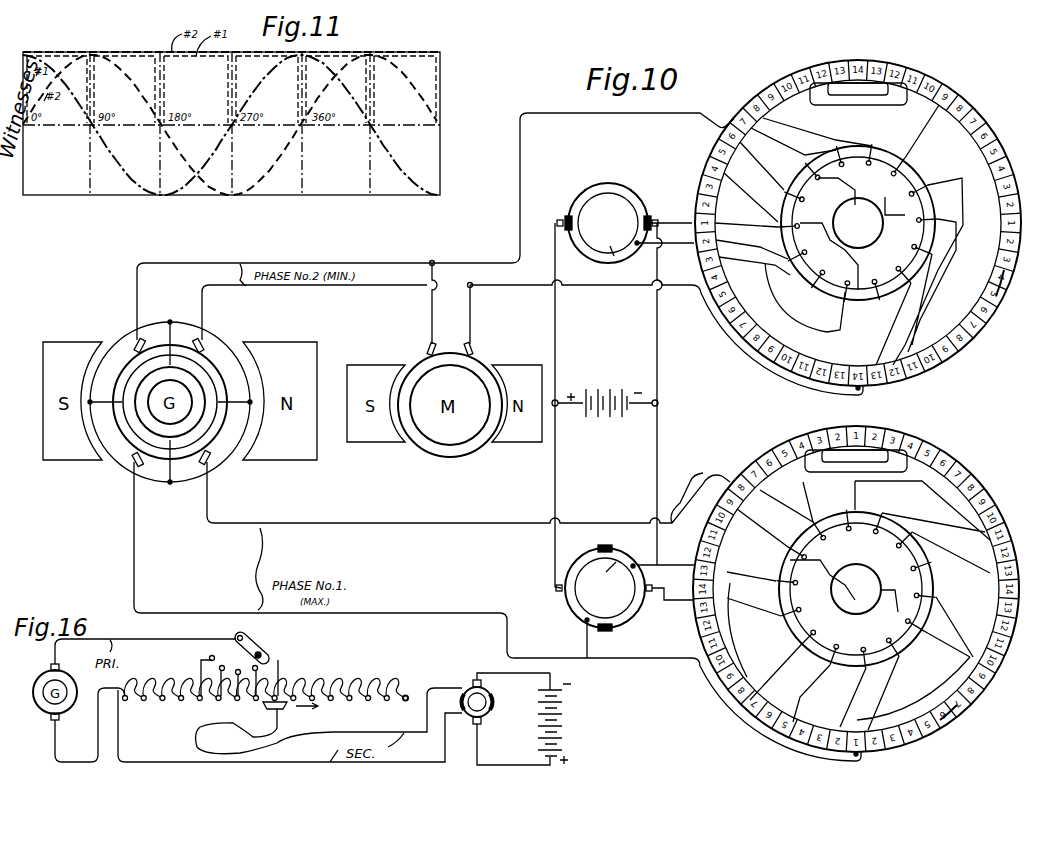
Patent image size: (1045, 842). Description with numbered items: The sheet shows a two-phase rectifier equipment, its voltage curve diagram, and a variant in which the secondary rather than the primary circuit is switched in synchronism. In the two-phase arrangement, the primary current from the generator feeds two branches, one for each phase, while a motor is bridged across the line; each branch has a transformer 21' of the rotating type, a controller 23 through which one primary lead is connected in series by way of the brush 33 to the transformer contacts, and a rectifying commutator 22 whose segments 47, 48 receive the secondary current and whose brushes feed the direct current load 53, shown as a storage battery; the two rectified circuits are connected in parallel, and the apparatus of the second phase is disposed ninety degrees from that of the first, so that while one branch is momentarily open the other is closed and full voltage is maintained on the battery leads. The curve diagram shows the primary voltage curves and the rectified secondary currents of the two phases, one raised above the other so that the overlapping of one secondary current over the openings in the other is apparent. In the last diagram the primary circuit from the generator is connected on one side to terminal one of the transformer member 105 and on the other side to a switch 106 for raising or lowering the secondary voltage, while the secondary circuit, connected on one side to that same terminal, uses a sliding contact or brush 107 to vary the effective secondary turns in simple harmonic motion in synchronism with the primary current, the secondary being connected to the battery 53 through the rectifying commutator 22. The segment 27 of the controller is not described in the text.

In FIG. 10, the rectifier 22 is at (625, 416).
In FIG. 16, the rectifier 22 is at (506, 719).
In FIG. 10, the segment of the rectifier 47 is at (618, 198).
In FIG. 10, the segment of the rectifier 48 is at (585, 612).
In FIG. 10, the direct current load 53 is at (605, 414).
In FIG. 16, the direct current load 53 is at (564, 718).
In FIG. 10, the controller 23 is at (857, 406).
In FIG. 10, the contact segment 27 is at (1024, 298).
In FIG. 10, the transformer 21' is at (859, 407).
In FIG. 10, the brush 33 is at (898, 766).
In FIG. 16, the transformer member 105 is at (269, 685).
In FIG. 16, the switch 106 is at (262, 645).
In FIG. 16, the sliding contact or brush 107 is at (280, 712).